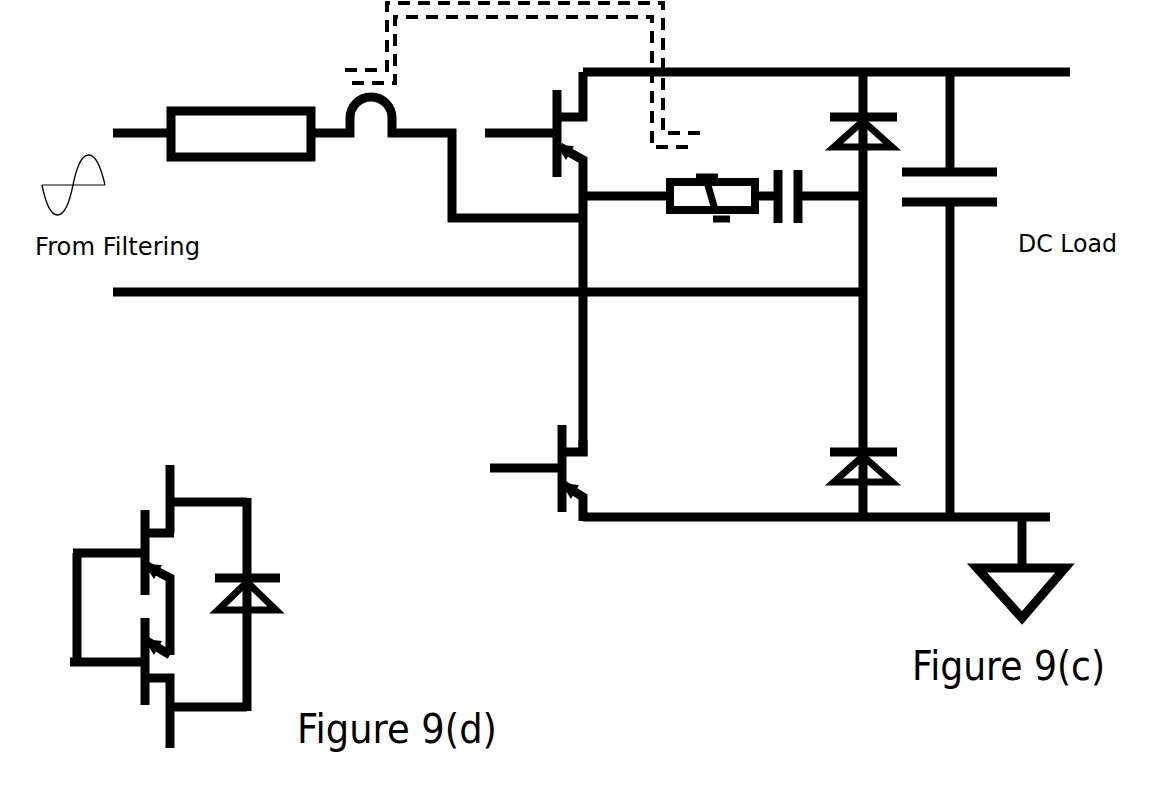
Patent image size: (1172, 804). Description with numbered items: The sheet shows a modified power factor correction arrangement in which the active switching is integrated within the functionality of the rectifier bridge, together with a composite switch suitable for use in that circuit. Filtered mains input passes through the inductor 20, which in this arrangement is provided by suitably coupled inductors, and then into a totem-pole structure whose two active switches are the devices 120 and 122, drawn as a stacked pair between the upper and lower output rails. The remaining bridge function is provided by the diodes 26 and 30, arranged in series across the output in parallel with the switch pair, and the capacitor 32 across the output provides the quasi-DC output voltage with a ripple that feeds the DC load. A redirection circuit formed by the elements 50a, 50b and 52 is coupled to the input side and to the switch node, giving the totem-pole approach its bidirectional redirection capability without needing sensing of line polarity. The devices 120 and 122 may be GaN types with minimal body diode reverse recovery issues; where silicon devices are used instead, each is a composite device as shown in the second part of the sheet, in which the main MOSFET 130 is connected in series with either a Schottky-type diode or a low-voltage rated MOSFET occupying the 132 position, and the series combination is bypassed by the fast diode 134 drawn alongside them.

In FIG. 9C, the inductor 20 is at (231, 104).
In FIG. 9C, the current sensing element 50a is at (449, 157).
In FIG. 9C, the current sensing element 50b is at (738, 173).
In FIG. 9C, the capacitor 52 is at (813, 168).
In FIG. 9C, the active switch 120 is at (537, 118).
In FIG. 9C, the active switch 122 is at (547, 455).
In FIG. 9C, the rectifying bridge diode 26 is at (825, 100).
In FIG. 9C, the rectifying bridge diode 30 is at (830, 497).
In FIG. 9C, the capacitor 32 is at (970, 153).
In FIG. 9D, the main MOSFET 130 is at (125, 520).
In FIG. 9D, the series device 132 is at (141, 683).
In FIG. 9D, the fast diode 134 is at (287, 627).